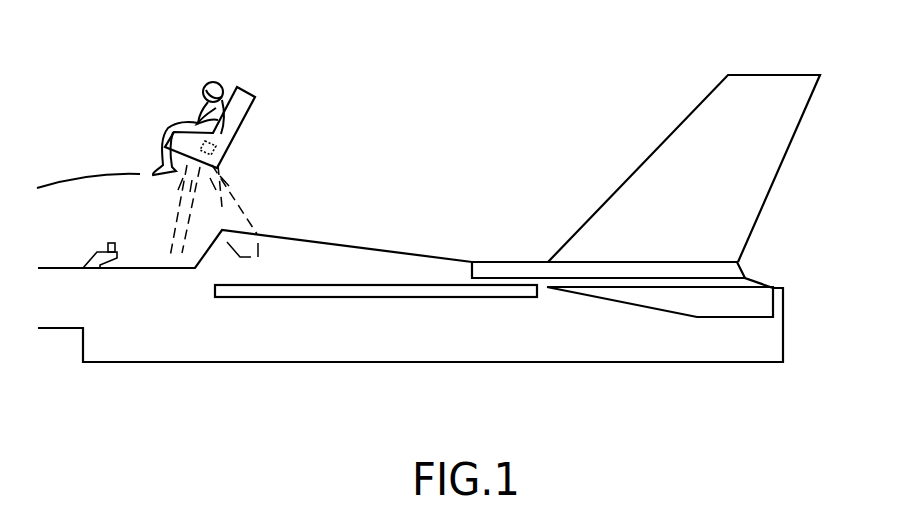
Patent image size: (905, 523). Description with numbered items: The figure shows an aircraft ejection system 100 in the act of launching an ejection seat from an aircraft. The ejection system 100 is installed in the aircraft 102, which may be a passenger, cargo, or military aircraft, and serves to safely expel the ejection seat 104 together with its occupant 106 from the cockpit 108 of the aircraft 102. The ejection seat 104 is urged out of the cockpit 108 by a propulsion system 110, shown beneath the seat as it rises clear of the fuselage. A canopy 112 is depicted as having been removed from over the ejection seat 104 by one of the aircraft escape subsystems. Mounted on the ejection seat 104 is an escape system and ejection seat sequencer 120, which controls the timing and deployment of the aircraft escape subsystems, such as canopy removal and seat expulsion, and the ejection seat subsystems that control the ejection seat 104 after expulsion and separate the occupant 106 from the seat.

The aircraft ejection system 100 is at (333, 151).
The aircraft 102 is at (418, 336).
The ejection seat 104 is at (245, 105).
The occupant 106 is at (207, 85).
The cockpit 108 is at (133, 255).
The propulsion system 110 is at (170, 215).
The canopy 112 is at (55, 184).
The escape system and ejection seat (ESES) sequencer 120 is at (218, 148).